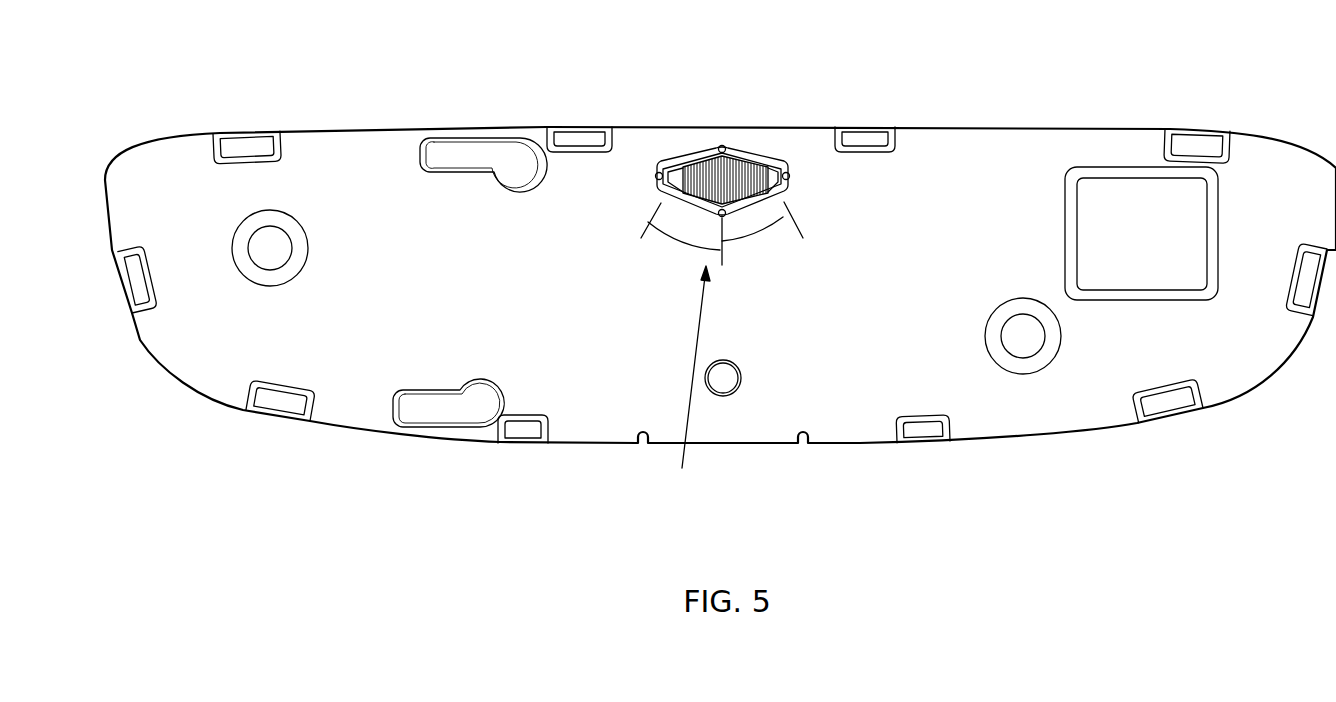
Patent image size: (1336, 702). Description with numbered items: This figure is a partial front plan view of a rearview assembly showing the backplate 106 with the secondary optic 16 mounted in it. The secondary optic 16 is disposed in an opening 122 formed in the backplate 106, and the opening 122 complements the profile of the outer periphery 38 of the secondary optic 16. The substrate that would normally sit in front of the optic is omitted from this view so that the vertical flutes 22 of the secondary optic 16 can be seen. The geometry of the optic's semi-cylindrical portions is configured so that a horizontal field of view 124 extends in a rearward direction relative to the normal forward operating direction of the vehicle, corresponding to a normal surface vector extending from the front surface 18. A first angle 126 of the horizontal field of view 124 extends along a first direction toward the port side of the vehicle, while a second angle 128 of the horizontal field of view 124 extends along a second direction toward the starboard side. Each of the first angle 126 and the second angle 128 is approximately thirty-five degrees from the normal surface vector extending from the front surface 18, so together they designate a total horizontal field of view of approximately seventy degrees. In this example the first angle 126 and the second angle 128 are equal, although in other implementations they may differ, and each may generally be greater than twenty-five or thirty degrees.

The backplate 106 is at (995, 137).
The opening 122 is at (677, 155).
The outer periphery 38 is at (703, 150).
The vertical flutes 22 is at (737, 172).
The secondary optic 16 is at (770, 172).
The front surface 18 is at (658, 173).
The first angle 126 is at (682, 245).
The second angle 128 is at (760, 237).
The horizontal field of view 124 is at (683, 386).